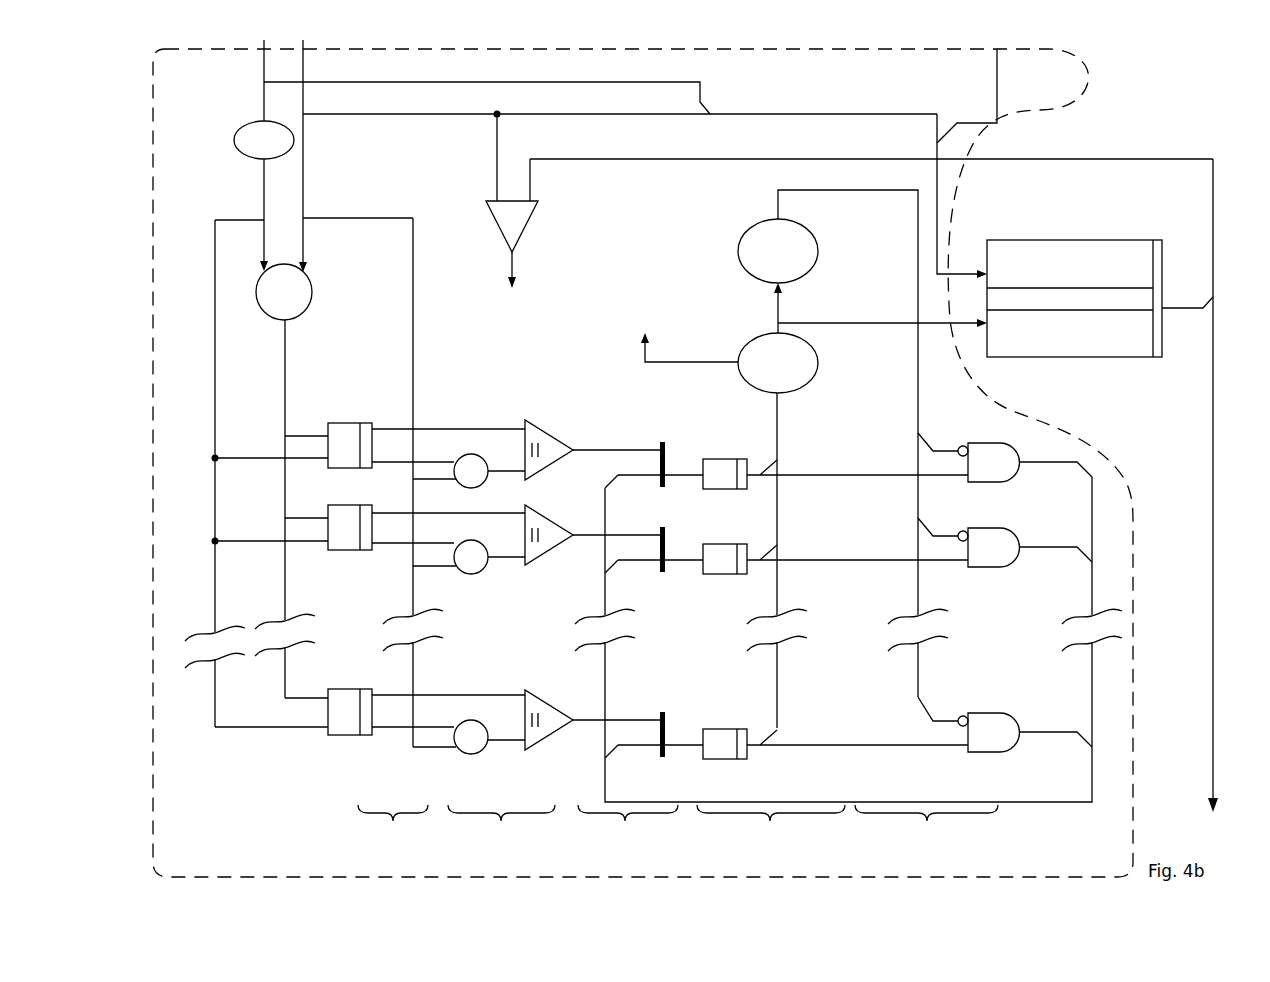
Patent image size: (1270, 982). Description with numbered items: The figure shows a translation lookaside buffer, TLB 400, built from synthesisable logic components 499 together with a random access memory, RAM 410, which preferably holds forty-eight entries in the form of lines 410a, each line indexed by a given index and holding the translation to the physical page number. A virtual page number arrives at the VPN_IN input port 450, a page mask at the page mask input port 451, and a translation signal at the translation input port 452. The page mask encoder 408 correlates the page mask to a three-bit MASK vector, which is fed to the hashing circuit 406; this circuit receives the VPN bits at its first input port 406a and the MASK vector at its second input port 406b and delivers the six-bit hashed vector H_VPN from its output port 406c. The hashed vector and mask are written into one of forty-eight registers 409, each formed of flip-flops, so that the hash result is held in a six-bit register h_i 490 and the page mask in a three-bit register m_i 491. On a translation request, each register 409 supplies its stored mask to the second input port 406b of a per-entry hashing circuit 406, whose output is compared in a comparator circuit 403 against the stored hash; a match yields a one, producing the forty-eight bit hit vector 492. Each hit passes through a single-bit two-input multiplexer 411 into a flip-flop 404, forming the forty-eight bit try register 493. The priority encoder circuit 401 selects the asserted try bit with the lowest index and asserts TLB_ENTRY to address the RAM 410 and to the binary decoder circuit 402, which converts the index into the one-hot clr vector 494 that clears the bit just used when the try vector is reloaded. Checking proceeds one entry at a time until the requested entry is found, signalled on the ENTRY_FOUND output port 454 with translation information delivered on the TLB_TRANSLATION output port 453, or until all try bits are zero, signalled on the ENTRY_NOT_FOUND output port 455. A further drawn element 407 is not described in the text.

The translation lookaside buffer 400 is at (128, 562).
The priority encoder circuit 401 is at (820, 350).
The binary decoder circuit 402 is at (748, 236).
The comparator circuit 403 is at (548, 436).
The flip-flop 404 is at (720, 459).
The hashing circuit 406 is at (312, 303).
The first input port 406a is at (310, 259).
The second input port 406b is at (258, 267).
The output port 406c is at (285, 333).
The equality comparator 407 is at (530, 222).
The page mask encoder 408 is at (233, 140).
The register 409 is at (362, 413).
The random access memory 410 is at (1040, 360).
The line 410a is at (1078, 290).
The single bit 2-input multiplexer 411 is at (665, 441).
The VPN_IN input port 450 is at (303, 66).
The CP0_PAGE_MASK input port 451 is at (264, 72).
The CP0_TRANSLATION input port 452 is at (997, 82).
The TLB_TRANSLATION output port 453 is at (1213, 740).
The ENTRY_FOUND output port 454 is at (492, 323).
The ENTRY_NOT_FOUND output port 455 is at (646, 320).
The 6-bit register h_i 490 is at (501, 835).
The 3-bit register m_i 491 is at (393, 835).
The 48 bit vector hit 492 is at (628, 835).
The 48 bit register try 493 is at (771, 835).
The 48-bit one-hot vector clr 494 is at (973, 649).
The synthesisable logic components 499 is at (152, 708).